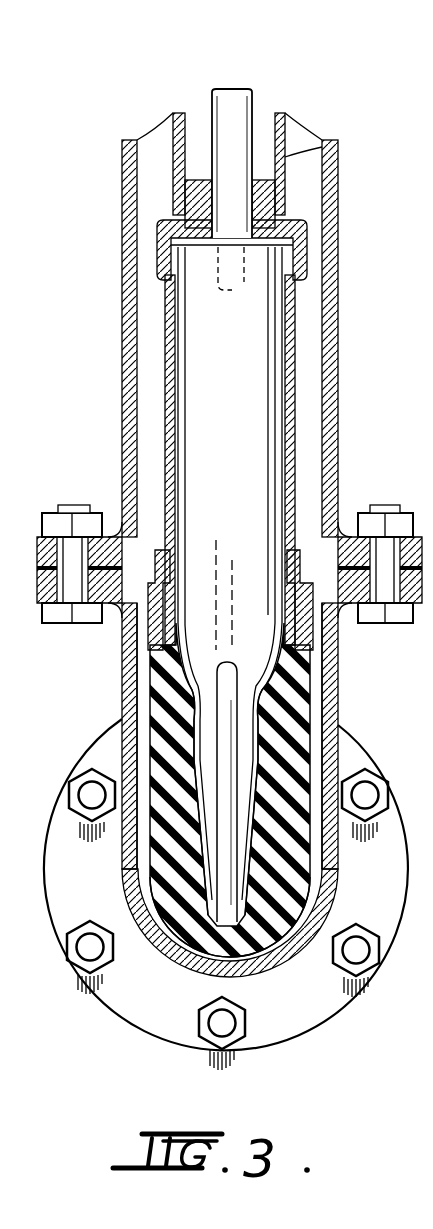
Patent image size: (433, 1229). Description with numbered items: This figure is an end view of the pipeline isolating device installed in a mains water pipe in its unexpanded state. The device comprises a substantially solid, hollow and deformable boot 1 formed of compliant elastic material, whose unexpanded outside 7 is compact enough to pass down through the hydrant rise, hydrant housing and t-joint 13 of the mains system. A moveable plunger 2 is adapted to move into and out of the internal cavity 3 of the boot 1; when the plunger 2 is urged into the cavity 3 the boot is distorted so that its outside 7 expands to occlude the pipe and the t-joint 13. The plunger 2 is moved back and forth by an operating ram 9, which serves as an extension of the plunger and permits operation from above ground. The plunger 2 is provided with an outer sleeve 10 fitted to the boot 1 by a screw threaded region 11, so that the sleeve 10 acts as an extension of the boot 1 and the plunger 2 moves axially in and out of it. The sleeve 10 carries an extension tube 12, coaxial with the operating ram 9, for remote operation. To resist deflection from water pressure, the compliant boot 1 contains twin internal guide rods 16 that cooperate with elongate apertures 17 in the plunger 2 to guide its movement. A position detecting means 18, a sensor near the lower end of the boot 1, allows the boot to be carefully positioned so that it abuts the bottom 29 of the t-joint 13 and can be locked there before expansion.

The boot 1 is at (172, 724).
The plunger 2 is at (233, 386).
The internal cavity 3 is at (245, 737).
The outside of the boot 7 is at (148, 672).
The operating ram 9 is at (233, 97).
The outer sleeve 10 is at (298, 367).
The screw threaded region 11 is at (160, 555).
The extension tube 12 is at (337, 157).
The t-joint 13 is at (333, 663).
The guide rods 16 is at (187, 863).
The elongate apertures 17 is at (207, 595).
The position detecting means 18 is at (180, 967).
The bottom of the t-joint 29 is at (243, 970).